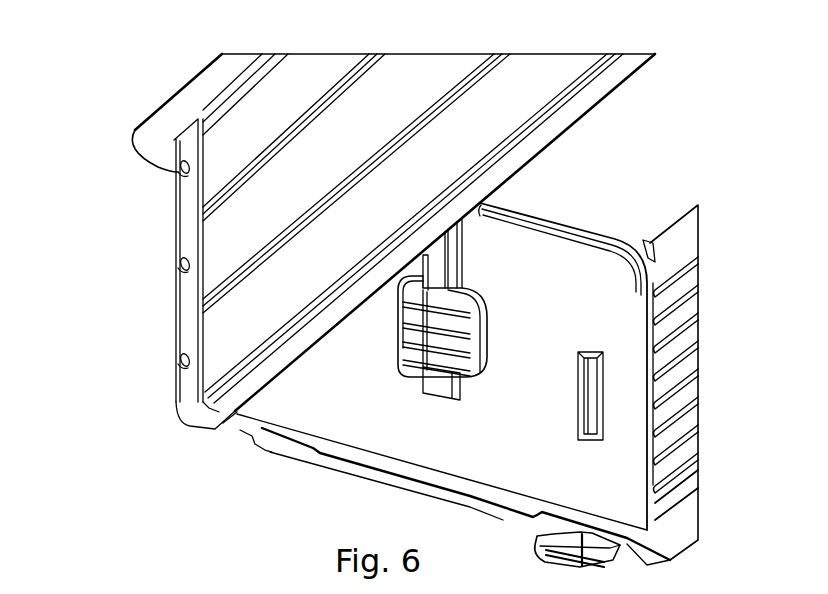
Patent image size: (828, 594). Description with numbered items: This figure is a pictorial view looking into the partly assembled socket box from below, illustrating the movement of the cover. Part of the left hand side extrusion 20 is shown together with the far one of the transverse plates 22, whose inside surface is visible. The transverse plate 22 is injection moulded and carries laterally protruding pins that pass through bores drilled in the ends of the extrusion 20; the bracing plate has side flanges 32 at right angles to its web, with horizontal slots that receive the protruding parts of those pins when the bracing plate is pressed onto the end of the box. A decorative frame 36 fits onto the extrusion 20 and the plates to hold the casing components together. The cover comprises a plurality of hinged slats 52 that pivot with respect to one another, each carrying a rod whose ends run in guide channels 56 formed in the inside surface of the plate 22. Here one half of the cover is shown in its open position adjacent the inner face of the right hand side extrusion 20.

The side extrusion 20 is at (298, 298).
The transverse plate 22 is at (623, 362).
The side flange 32 is at (172, 335).
The decorative frame 36 is at (130, 138).
The slat 52 is at (697, 472).
The guide channel 56 is at (527, 232).